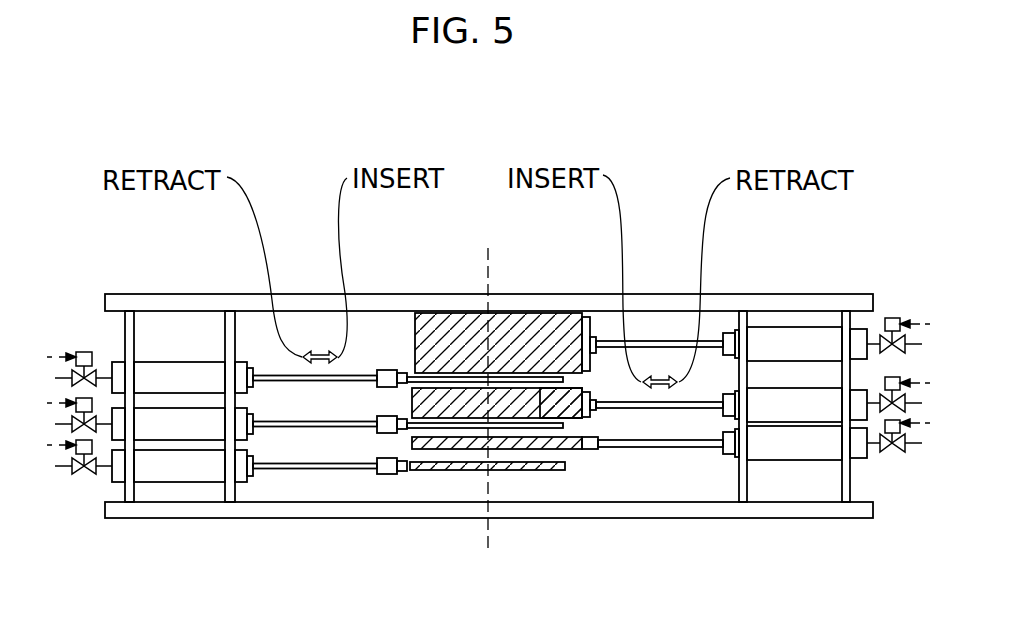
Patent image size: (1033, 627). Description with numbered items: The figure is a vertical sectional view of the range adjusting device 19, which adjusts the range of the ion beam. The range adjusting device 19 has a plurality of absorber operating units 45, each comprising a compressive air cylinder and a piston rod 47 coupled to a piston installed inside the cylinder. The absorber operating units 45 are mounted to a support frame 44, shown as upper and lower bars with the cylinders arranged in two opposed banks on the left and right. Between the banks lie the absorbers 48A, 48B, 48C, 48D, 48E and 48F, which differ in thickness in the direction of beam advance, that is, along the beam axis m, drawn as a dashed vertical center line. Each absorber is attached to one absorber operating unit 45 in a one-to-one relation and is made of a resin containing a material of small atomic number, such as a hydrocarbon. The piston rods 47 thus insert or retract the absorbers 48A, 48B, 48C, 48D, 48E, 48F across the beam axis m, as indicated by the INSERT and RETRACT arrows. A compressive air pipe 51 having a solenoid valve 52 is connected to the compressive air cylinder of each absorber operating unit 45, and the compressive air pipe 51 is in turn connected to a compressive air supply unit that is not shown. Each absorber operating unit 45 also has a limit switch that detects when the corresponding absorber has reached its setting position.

The range adjusting device 19 is at (812, 275).
The support frame 44 is at (170, 300).
The absorber operating unit 45 is at (181, 364).
The piston rod 47 is at (690, 447).
The absorber 48A is at (432, 367).
The absorber 48B is at (425, 449).
The absorber 48C is at (460, 472).
The absorber 48D is at (548, 449).
The absorber 48E is at (562, 400).
The absorber 48F is at (507, 343).
The compressive air pipe 51 is at (874, 446).
The solenoid valve 52 is at (898, 453).
The beam axis m is at (482, 276).